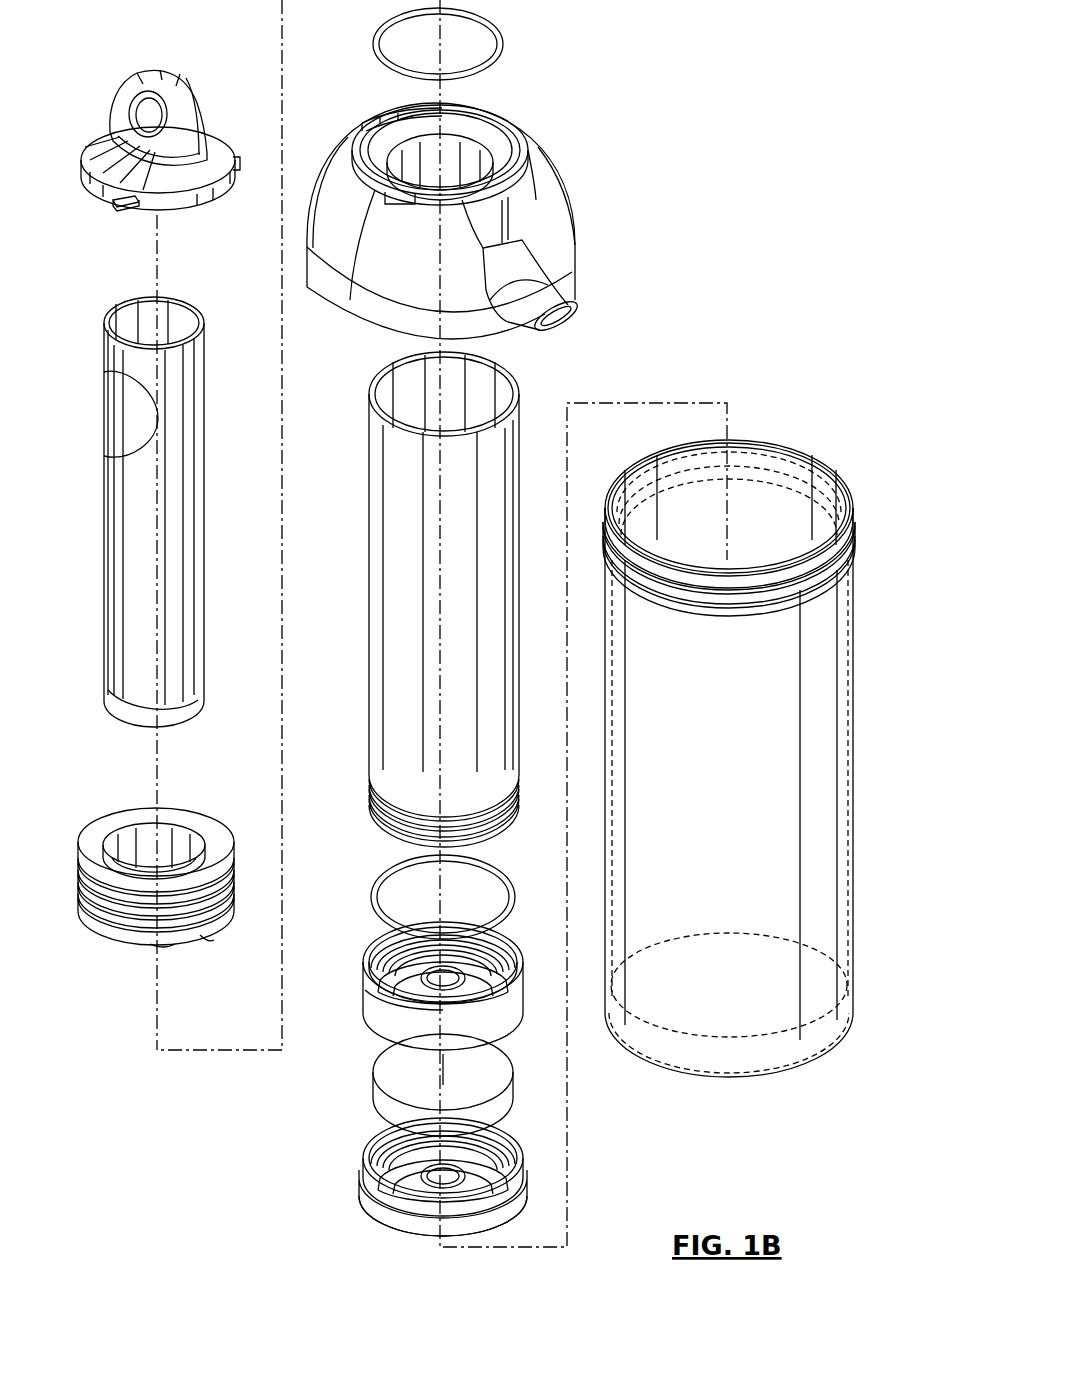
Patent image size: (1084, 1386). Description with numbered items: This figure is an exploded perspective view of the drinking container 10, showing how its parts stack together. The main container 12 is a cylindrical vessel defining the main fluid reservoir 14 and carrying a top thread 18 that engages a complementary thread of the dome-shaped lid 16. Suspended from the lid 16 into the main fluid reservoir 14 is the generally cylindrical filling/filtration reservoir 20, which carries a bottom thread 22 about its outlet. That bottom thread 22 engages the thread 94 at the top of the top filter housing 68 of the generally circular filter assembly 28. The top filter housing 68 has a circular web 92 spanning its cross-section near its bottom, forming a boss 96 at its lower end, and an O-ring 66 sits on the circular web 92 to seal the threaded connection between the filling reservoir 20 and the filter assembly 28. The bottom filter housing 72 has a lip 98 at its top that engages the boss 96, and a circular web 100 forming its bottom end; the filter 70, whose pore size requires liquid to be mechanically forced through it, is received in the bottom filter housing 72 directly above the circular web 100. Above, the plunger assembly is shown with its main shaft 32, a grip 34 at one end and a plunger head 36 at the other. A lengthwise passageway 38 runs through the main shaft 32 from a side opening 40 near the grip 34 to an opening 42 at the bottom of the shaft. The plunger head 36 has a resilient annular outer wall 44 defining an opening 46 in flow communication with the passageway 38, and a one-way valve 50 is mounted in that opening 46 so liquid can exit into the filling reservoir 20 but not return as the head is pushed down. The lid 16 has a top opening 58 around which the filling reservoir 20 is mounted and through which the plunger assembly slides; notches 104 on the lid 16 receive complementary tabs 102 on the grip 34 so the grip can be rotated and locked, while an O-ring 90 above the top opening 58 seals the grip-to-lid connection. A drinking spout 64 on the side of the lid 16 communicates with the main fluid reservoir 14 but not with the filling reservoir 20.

The drinking container 10 is at (792, 280).
The main container 12 is at (762, 1050).
The main fluid reservoir 14 is at (729, 758).
The lid 16 is at (545, 168).
The top thread 18 is at (856, 512).
The filling/filtration reservoir 20 is at (444, 563).
The bottom thread 22 is at (384, 852).
The filter assembly 28 is at (335, 1006).
The main shaft 32 is at (205, 402).
The grip 34 is at (207, 120).
The plunger head 36 is at (236, 833).
The passageway 38 is at (154, 512).
The opening 40 is at (128, 410).
The opening 42 is at (163, 702).
The annular outer wall 44 is at (222, 888).
The opening 46 is at (170, 948).
The valve 50 is at (202, 945).
The top opening 58 is at (470, 165).
The drinking spout 64 is at (528, 297).
The O-ring 66 is at (500, 876).
The top filter housing 68 is at (525, 980).
The filter 70 is at (512, 1090).
The bottom filter housing 72 is at (525, 1181).
The O-ring 90 is at (505, 42).
The circular web 92 is at (367, 944).
The thread 94 is at (500, 940).
The boss 96 is at (500, 1192).
The lip 98 is at (508, 1012).
The circular web 100 is at (402, 1150).
The tabs 102 is at (126, 214).
The notches 104 is at (385, 118).